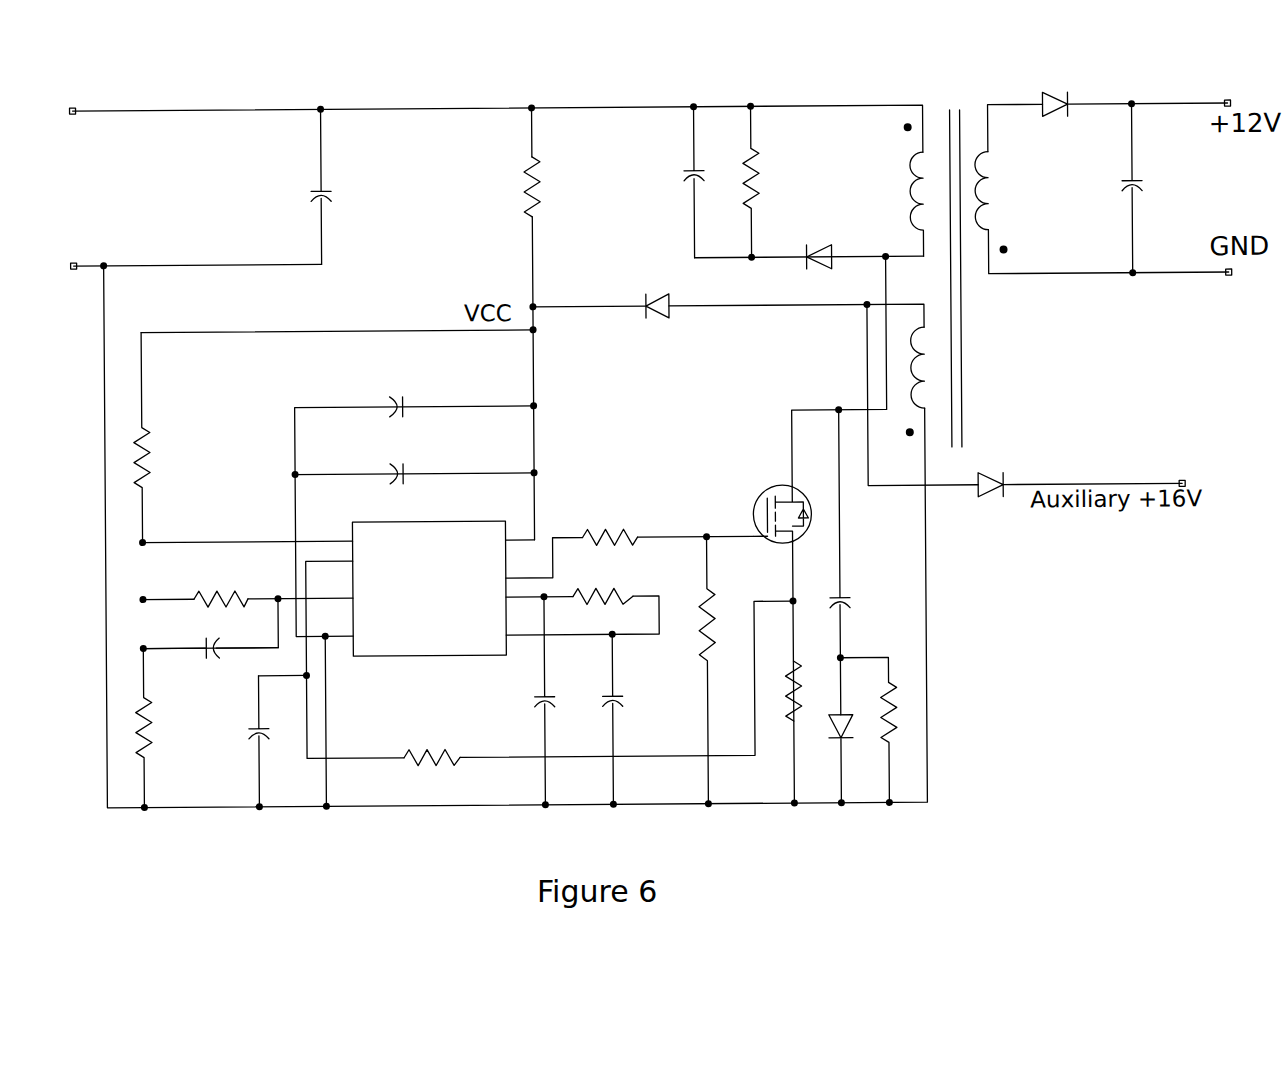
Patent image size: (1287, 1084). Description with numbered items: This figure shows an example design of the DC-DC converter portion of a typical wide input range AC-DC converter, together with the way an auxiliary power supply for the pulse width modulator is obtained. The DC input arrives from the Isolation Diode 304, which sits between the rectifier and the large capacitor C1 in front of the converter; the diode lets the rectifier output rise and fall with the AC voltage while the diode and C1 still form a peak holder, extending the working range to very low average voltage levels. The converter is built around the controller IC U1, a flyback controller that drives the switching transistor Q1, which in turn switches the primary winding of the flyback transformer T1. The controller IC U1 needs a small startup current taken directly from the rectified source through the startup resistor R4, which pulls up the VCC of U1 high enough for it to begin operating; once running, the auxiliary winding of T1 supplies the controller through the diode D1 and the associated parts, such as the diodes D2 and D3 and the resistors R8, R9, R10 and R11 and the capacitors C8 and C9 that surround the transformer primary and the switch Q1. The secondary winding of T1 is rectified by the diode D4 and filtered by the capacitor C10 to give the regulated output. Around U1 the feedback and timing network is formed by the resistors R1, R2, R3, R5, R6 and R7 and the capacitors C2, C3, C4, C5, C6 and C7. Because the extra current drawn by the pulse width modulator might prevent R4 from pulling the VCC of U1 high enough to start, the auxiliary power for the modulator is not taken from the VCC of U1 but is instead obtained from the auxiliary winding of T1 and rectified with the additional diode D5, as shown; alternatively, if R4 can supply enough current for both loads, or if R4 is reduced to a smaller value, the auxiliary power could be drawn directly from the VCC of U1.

The Isolation Diode 304 is at (166, 191).
The large capacitor in front of the DC-DC converter C1 is at (332, 186).
The capacitor 100pF C2 is at (210, 638).
The capacitor 470pF C3 is at (270, 741).
The capacitor 10uF 20V C4 is at (391, 398).
The capacitor 0.01uF C5 is at (391, 465).
The capacitor 0.01uF C6 is at (554, 701).
The capacitor 4700pF C7 is at (622, 719).
The capacitor 820pF C8 is at (850, 562).
The capacitor 3300pF C9 is at (703, 182).
The capacitor 2200uF 16V C10 is at (1142, 187).
The resistor 20K R1 is at (153, 437).
The resistor 3.6K R2 is at (155, 727).
The resistor 150K R3 is at (222, 589).
The startup resistor R4 is at (543, 186).
The resistor 1K R5 is at (432, 748).
The resistor 27 ohm R6 is at (607, 529).
The resistor 10K R7 is at (604, 587).
The resistor 20K R8 is at (719, 669).
The resistor 0.85 ohm R9 is at (803, 699).
The resistor 2.5K R10 is at (878, 730).
The resistor 4.7K R11 is at (761, 181).
The diode 1N3613 D1 is at (658, 298).
The diode 1N3613 D2 is at (818, 249).
The diode 1N3613 D3 is at (848, 746).
The diode 10TQ35 D4 is at (1050, 94).
The additional diode D5 is at (991, 476).
The MOSFET IRF432 Q1 is at (786, 520).
The controller IC U1 is at (428, 579).
The transformer E41/17/12-3C90-A630 T1 is at (1072, 262).